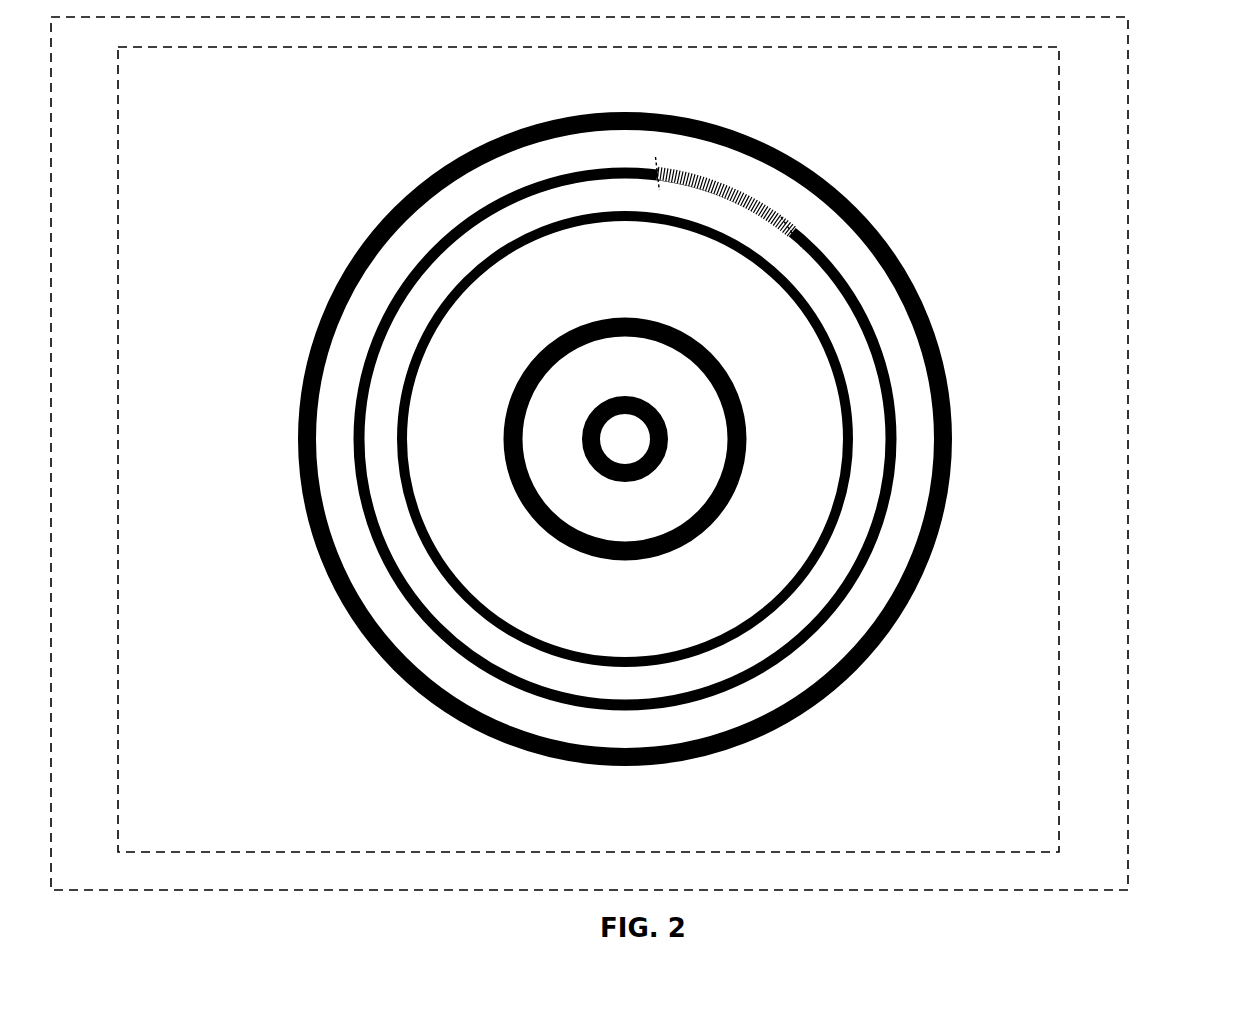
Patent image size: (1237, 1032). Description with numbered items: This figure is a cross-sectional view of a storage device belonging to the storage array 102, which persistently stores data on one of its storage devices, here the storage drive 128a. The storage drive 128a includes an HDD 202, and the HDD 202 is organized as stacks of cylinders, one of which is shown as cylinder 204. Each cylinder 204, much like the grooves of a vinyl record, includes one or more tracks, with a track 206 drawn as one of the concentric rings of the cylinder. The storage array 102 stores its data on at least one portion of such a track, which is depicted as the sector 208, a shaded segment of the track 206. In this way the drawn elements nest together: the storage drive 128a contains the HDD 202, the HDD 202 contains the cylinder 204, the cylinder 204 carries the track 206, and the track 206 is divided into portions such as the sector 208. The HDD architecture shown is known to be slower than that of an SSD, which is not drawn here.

The storage array 102 is at (1128, 708).
The storage drive 128a is at (611, 814).
The HDD 202 is at (466, 112).
The cylinder 204 is at (406, 684).
The track 206 is at (405, 263).
The sector 208 is at (756, 193).